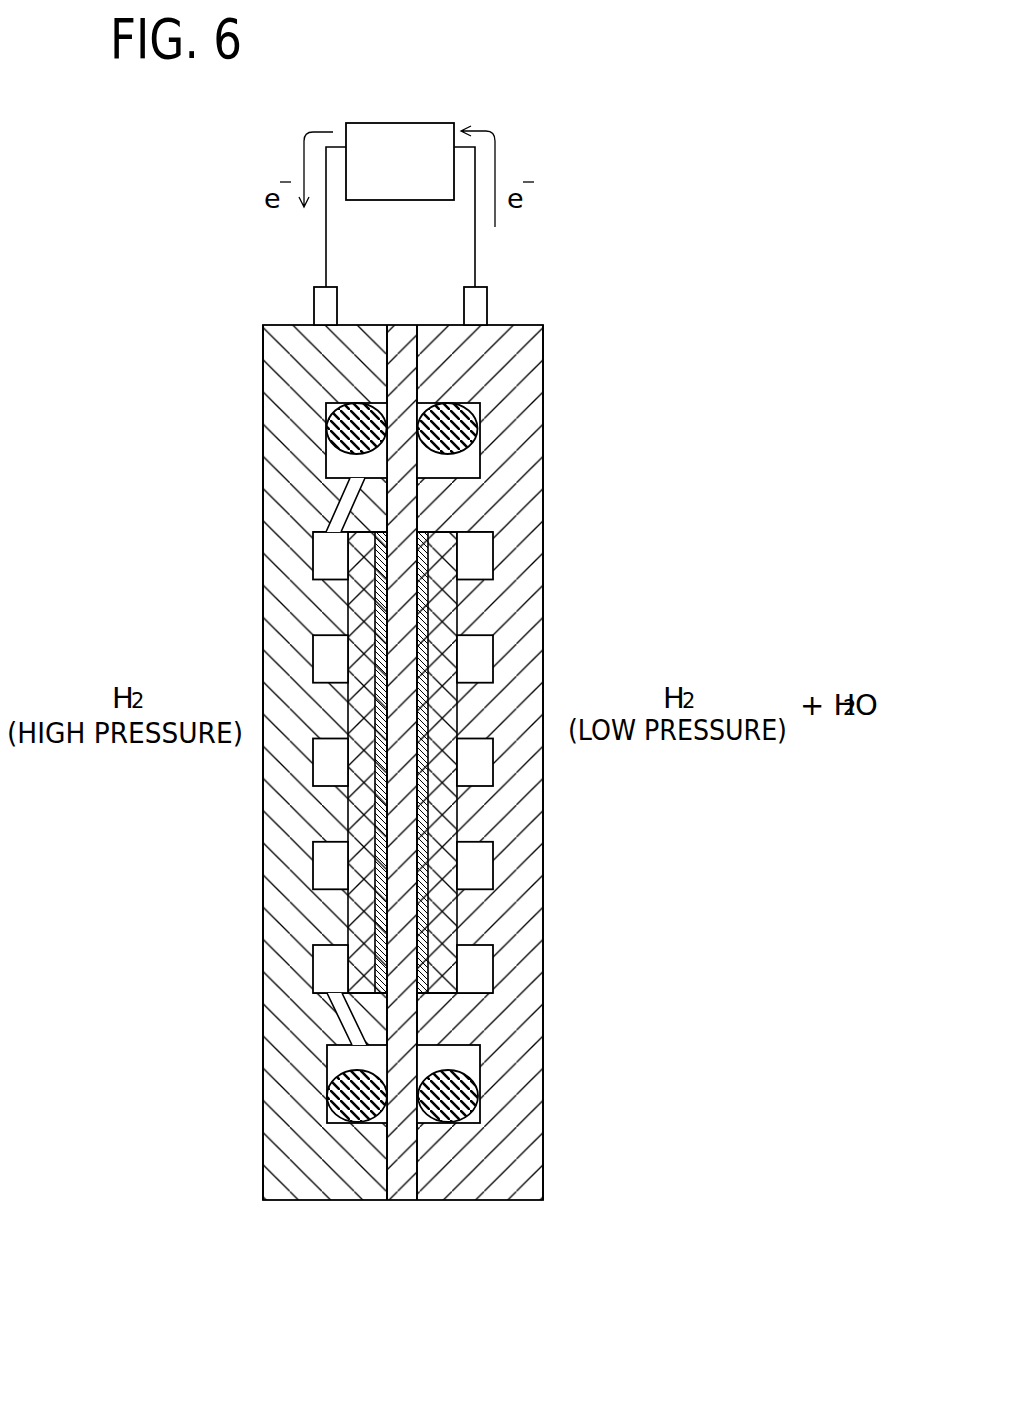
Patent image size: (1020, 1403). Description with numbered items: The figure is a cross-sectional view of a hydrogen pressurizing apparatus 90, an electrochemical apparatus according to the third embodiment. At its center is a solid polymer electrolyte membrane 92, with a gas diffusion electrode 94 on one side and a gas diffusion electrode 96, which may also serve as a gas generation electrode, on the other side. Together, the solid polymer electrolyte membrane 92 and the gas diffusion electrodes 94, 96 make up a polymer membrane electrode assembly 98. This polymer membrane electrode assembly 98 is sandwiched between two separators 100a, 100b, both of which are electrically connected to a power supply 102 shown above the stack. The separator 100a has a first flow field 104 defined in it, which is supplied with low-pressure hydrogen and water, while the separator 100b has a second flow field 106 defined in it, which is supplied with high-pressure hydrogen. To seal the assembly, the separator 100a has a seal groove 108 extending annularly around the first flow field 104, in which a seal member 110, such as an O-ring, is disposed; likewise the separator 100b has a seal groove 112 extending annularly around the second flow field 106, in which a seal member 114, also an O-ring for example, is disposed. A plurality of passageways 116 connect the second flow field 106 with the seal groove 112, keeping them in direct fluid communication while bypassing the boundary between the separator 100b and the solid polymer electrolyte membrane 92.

The hydrogen pressurizing apparatus 90 is at (552, 75).
The solid polymer electrolyte membrane 92 is at (413, 1157).
The gas diffusion electrode 94 is at (440, 773).
The gas diffusion electrode 96 is at (365, 773).
The polymer membrane electrode assembly 98 is at (404, 762).
The separator 100a is at (513, 877).
The separator 100b is at (293, 878).
The power supply 102 is at (420, 122).
The first flow field 104 is at (483, 667).
The second flow field 106 is at (323, 665).
The seal groove 108 is at (478, 456).
The seal member 110 is at (460, 433).
The seal groove 112 is at (326, 453).
The seal member 114 is at (345, 432).
The passageways 116 is at (334, 521).